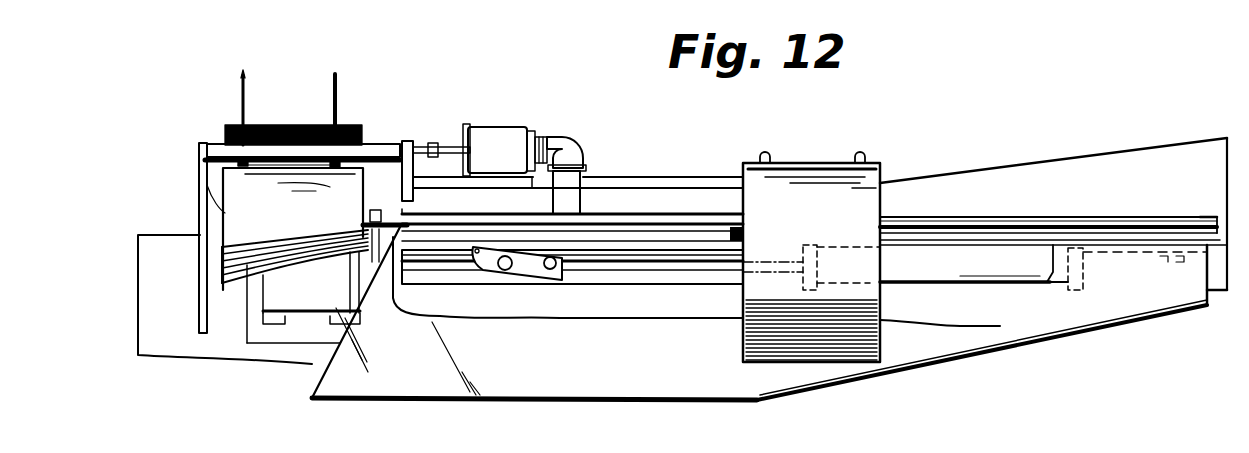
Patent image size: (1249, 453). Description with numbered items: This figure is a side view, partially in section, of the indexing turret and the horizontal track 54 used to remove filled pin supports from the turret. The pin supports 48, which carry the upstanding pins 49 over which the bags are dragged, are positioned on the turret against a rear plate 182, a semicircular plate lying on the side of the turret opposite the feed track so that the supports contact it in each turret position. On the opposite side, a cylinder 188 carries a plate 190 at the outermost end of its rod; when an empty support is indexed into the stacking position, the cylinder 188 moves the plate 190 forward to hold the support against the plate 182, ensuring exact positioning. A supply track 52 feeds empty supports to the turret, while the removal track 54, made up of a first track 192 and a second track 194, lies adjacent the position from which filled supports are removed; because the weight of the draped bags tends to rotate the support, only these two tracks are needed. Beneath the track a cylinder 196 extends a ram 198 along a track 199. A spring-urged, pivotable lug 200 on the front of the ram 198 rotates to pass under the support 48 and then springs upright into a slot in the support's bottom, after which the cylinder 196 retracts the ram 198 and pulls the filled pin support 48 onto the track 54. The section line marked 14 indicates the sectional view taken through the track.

The rear plate 182 is at (202, 147).
The upstanding pins 49 is at (245, 88).
The pin support 48 is at (378, 152).
The plate 190 is at (408, 140).
The cylinder 188 is at (501, 138).
The lug 200 is at (477, 247).
The track 199 is at (436, 262).
The ram 198 is at (524, 265).
The supply track 52 is at (1043, 162).
The track 54 is at (1010, 231).
The first track 192 is at (1133, 241).
The second track 194 is at (1197, 223).
The cylinder 196 is at (1020, 273).
The section line 14- 14 is at (903, 107).